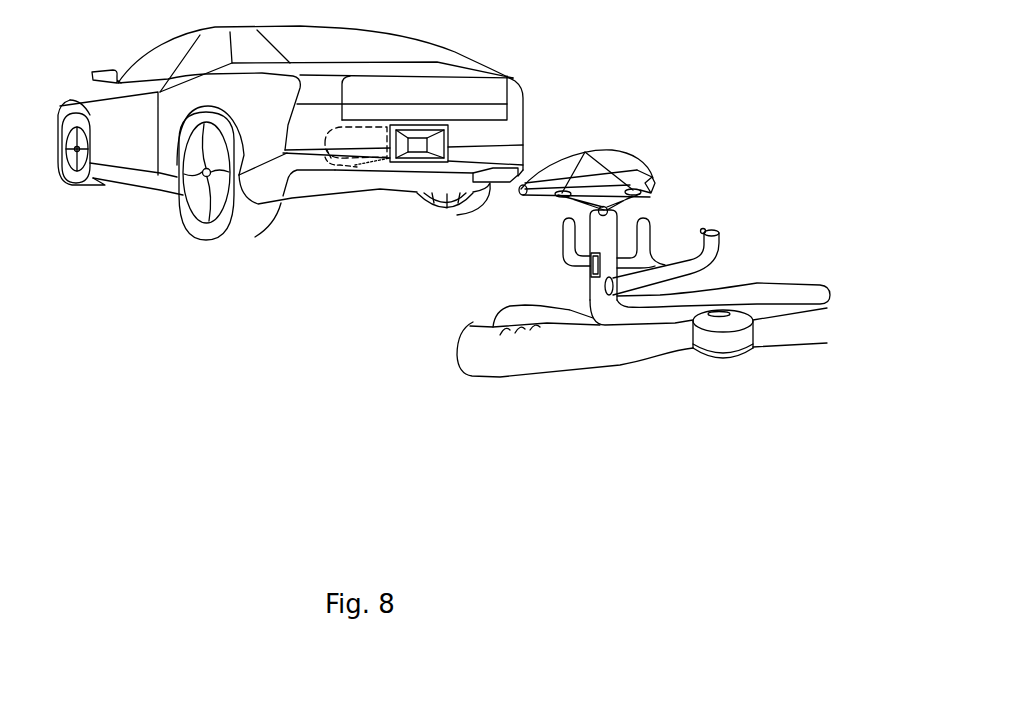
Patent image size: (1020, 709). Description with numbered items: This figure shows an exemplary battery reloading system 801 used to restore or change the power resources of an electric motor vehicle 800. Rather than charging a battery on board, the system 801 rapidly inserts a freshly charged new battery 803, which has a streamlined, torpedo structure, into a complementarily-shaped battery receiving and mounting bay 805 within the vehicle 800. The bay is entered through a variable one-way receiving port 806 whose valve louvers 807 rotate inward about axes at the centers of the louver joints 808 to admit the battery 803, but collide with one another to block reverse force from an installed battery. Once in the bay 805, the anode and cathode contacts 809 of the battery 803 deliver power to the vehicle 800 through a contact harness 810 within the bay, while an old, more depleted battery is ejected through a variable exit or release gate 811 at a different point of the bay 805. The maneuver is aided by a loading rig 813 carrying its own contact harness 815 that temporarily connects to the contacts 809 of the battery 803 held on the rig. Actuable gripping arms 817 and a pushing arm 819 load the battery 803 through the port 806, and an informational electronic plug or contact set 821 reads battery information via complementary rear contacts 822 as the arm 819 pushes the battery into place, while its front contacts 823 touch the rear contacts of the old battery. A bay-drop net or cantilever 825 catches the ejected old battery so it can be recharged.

The electric motor vehicle 800 is at (147, 198).
The battery reloading system 801 is at (441, 400).
The new battery 803 is at (633, 153).
The battery receiving and mounting bay 805 is at (372, 144).
The variable one-way receiving port 806 is at (440, 143).
The valve louvers 807 is at (423, 133).
The louver joints 808 is at (400, 127).
The anode and cathode contacts 809 is at (597, 162).
The contact harness 810 is at (370, 170).
The variable exit or release gate 811 is at (350, 167).
The loading rig 813 is at (627, 360).
The contact harness 815 is at (577, 203).
The actuable gripping arms 817 is at (562, 248).
The pushing arm 819 is at (715, 245).
The informational electronic plug or contact set 821 is at (702, 235).
The rear contacts 822 is at (655, 182).
The front contacts 823 is at (517, 192).
The bay-drop net or cantilever 825 is at (477, 318).